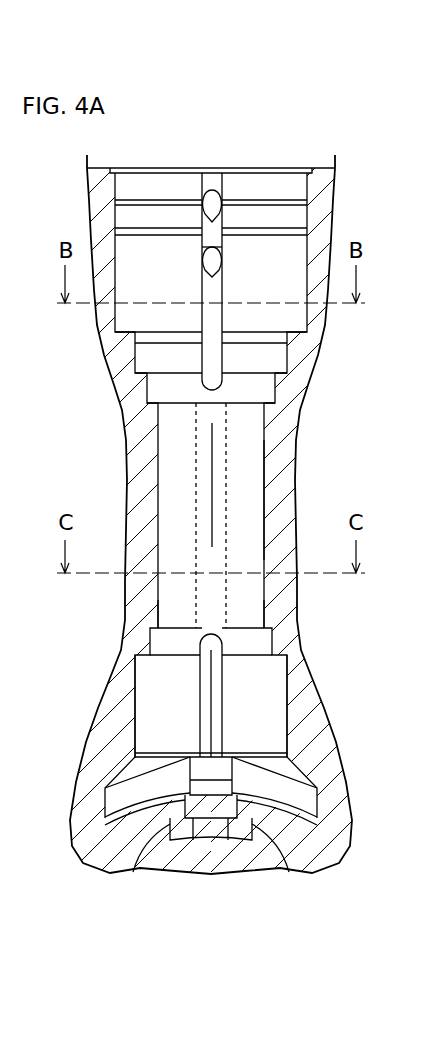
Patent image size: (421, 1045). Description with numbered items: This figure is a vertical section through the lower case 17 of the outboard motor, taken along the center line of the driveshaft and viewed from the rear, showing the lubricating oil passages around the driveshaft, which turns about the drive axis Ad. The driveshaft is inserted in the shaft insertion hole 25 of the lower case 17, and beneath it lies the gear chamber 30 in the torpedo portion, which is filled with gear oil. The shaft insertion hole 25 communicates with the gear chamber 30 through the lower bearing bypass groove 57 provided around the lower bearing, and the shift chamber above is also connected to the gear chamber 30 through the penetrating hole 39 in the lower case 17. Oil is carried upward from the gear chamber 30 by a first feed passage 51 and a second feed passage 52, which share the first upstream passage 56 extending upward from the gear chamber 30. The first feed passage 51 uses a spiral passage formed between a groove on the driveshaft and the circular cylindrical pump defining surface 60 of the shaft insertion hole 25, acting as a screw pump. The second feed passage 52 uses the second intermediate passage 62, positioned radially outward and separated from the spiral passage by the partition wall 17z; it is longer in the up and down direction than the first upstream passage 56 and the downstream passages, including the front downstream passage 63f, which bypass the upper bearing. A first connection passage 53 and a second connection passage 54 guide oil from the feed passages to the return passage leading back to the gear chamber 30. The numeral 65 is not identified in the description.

The lower case 17 is at (130, 434).
The partition wall 17z is at (202, 472).
The shaft insertion hole 25 is at (122, 184).
The gear chamber 30 is at (338, 851).
The penetrating hole 39 is at (228, 762).
The first feed passage 51 is at (196, 702).
The second feed passage 52 is at (194, 604).
The first connection passage 53 is at (211, 190).
The second connection passage 54 is at (205, 257).
The first upstream passage 56 is at (213, 688).
The lower bearing bypass groove 57 is at (213, 728).
The pump defining surface 60 is at (262, 496).
The second intermediate passage 62 is at (203, 610).
The front downstream passage 63f is at (222, 258).
The terminal pin 65 is at (215, 357).
The drive axis Ad is at (214, 440).